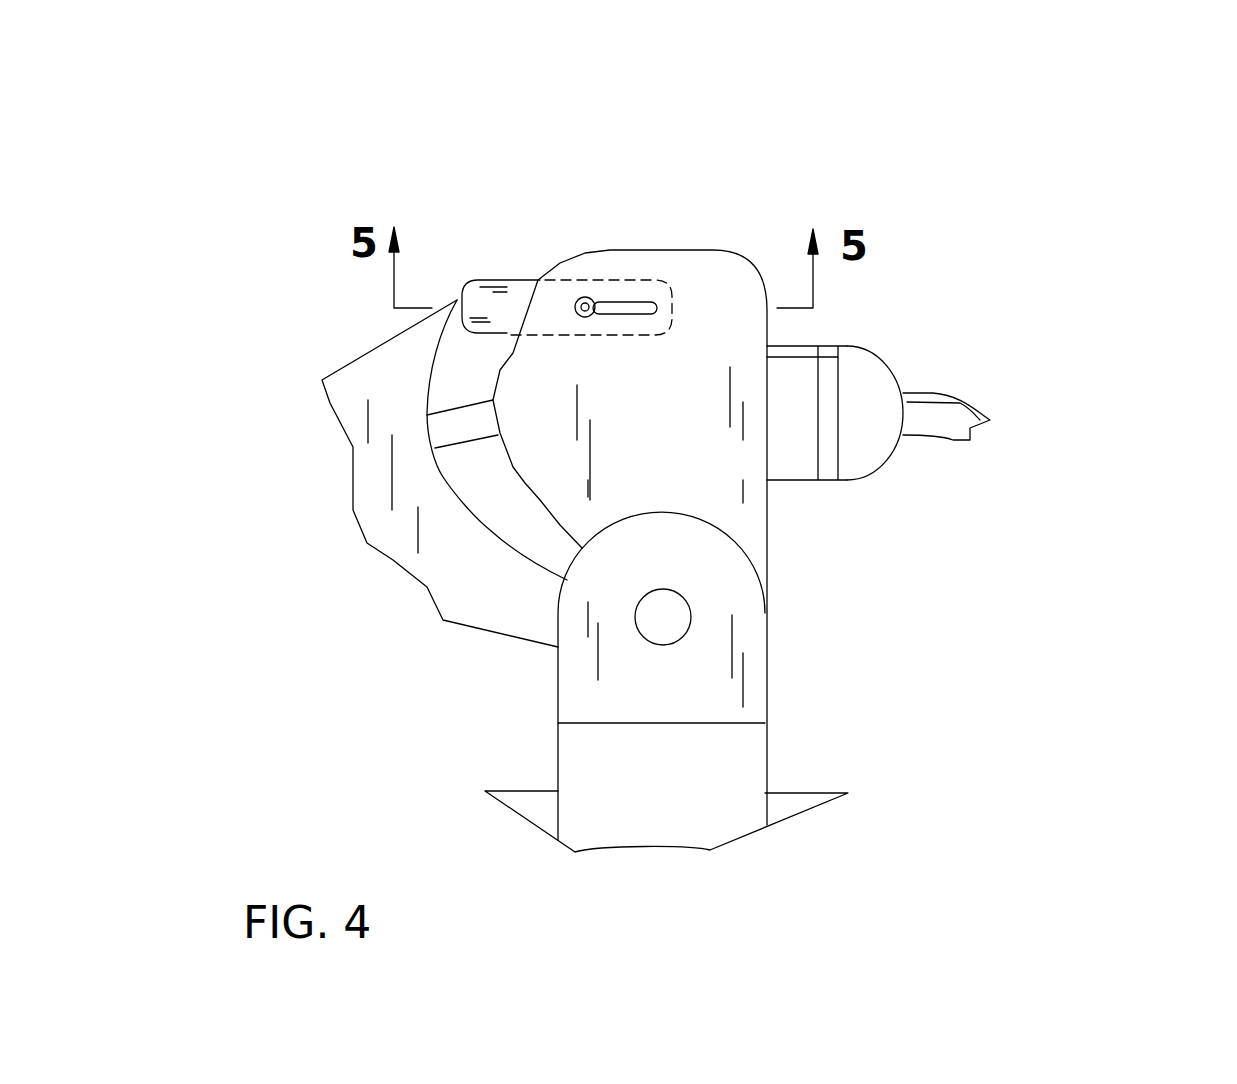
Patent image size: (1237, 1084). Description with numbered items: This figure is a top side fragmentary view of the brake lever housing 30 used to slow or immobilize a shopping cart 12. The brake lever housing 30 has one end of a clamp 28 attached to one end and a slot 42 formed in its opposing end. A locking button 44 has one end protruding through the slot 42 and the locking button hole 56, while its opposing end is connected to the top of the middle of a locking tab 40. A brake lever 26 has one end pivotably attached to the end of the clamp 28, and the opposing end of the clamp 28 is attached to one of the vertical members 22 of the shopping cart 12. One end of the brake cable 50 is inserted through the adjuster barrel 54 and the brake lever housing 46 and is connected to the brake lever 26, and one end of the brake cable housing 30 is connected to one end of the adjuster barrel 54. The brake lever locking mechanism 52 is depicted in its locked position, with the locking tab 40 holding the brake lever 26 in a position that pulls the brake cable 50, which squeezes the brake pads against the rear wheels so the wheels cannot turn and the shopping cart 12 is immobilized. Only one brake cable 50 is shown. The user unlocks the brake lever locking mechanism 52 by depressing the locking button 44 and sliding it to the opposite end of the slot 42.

The shopping cart 12 is at (780, 822).
The vertical member 22 is at (767, 793).
The brake lever 26 is at (330, 405).
The clamp 28 is at (767, 753).
The brake lever housing 30 is at (973, 402).
The locking tab 40 is at (513, 280).
The slot 42 is at (633, 300).
The locking button 44 is at (588, 297).
The brake lever housing 46 is at (767, 332).
The brake cable 50 is at (455, 447).
The brake lever locking mechanism 52 is at (490, 280).
The adjuster barrel 54 is at (873, 467).
The locking button hole 56 is at (585, 317).